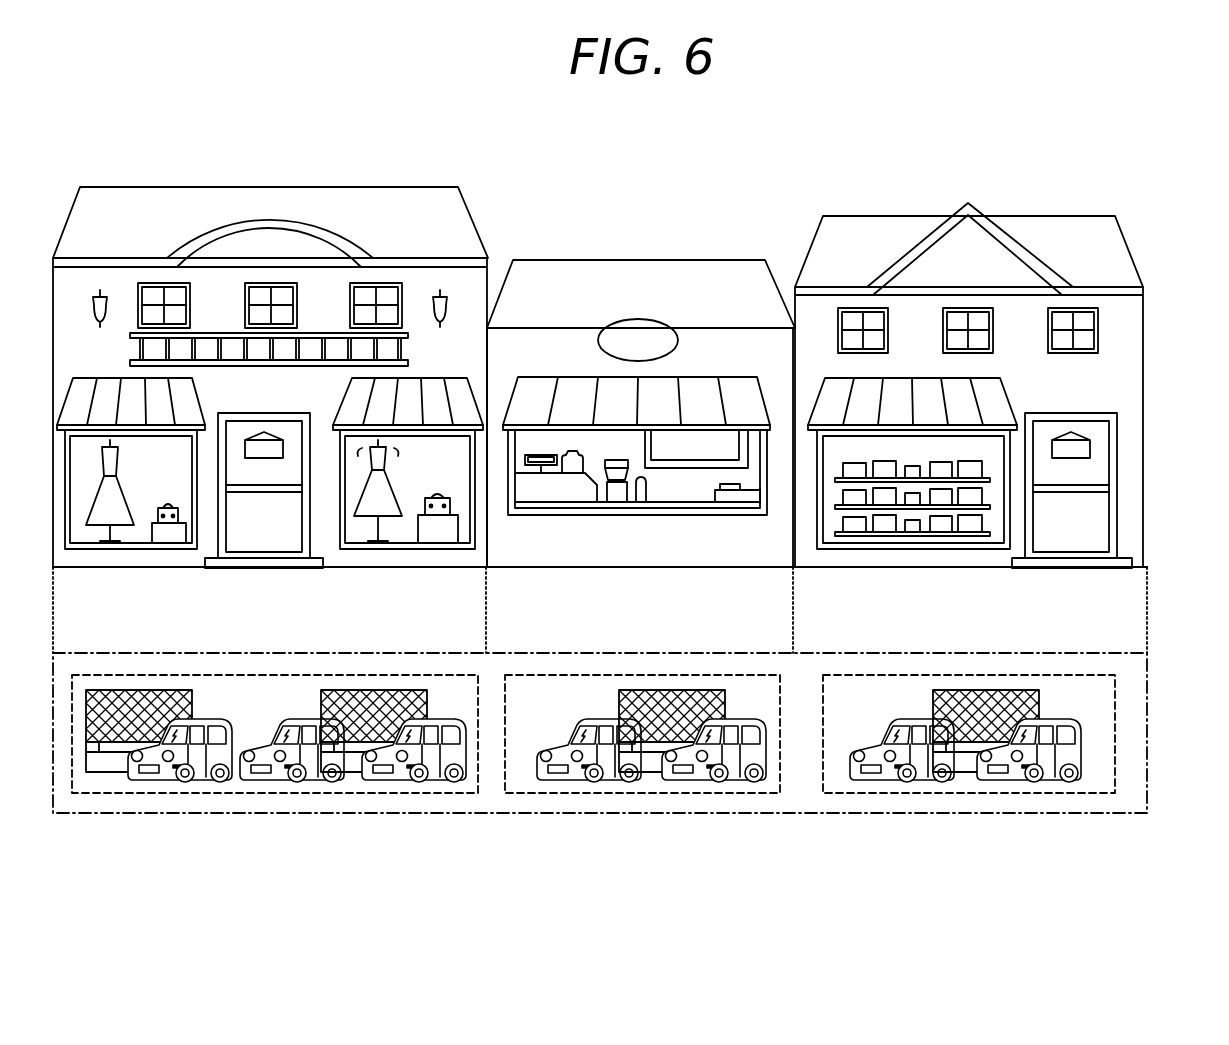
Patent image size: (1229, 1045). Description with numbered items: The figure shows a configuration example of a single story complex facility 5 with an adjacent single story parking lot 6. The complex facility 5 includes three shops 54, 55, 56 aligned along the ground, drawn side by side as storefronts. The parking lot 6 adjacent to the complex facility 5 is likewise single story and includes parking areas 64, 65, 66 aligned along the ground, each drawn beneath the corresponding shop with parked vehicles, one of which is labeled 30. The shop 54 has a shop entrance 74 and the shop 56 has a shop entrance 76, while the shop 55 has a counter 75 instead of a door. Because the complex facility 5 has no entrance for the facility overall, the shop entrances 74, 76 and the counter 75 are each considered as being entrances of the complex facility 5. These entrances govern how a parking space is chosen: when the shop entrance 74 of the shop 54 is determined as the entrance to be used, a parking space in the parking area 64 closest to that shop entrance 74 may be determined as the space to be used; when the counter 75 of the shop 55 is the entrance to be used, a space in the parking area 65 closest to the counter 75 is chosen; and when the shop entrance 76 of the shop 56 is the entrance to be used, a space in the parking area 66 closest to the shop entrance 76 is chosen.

The complex facility 5 is at (774, 163).
The shop 54 is at (300, 187).
The shop 55 is at (652, 258).
The shop 56 is at (1045, 237).
The shop entrance 74 is at (270, 518).
The counter 75 is at (562, 492).
The shop entrance 76 is at (1090, 537).
The parking lot 6 is at (417, 813).
The parking area 64 is at (240, 793).
The parking area 65 is at (655, 793).
The parking area 66 is at (905, 793).
The vehicle 30 is at (1050, 767).